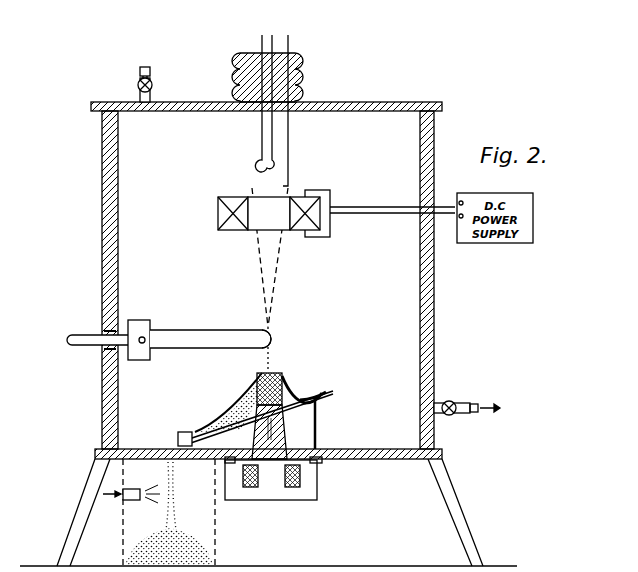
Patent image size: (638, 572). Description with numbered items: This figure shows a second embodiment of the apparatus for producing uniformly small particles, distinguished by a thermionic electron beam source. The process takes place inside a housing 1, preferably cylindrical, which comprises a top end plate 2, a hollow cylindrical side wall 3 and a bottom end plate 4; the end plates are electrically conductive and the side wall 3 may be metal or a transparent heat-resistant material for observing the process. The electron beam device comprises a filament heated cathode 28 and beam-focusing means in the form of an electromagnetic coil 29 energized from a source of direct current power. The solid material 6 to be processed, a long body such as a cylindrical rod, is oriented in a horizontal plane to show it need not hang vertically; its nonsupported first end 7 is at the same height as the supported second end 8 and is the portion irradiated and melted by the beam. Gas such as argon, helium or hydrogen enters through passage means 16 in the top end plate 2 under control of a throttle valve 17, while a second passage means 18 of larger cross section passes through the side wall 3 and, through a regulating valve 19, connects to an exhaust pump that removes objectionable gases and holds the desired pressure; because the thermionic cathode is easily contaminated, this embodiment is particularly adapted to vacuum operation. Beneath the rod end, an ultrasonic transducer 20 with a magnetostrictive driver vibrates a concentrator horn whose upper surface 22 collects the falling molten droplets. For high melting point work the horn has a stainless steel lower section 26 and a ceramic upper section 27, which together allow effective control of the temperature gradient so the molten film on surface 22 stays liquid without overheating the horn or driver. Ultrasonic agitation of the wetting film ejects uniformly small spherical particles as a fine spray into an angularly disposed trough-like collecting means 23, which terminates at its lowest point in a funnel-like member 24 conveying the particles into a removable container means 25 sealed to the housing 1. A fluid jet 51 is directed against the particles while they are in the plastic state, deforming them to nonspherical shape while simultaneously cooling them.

The housing 1 is at (435, 296).
The top end plate 2 is at (408, 101).
The hollow cylindrical side wall 3 is at (102, 214).
The bottom end plate 4 is at (442, 451).
The solid material 6 is at (211, 330).
The nonsupported first end 7 is at (263, 333).
The supported second end 8 is at (155, 327).
The passage means 16 is at (151, 102).
The throttle valve 17 is at (138, 86).
The second passage means 18 is at (424, 404).
The regulating valve 19 is at (453, 401).
The ultrasonic transducer 20 is at (318, 483).
The upper surface 22 is at (276, 372).
The collecting means 23 is at (322, 397).
The funnel-like member 24 is at (183, 438).
The container means 25 is at (216, 530).
The stainless steel lower section 26 is at (290, 427).
The ceramic upper section 27 is at (293, 386).
The filament heated cathode 28 is at (290, 175).
The electromagnetic coil 29 is at (297, 233).
The fluid jet 51 is at (133, 501).